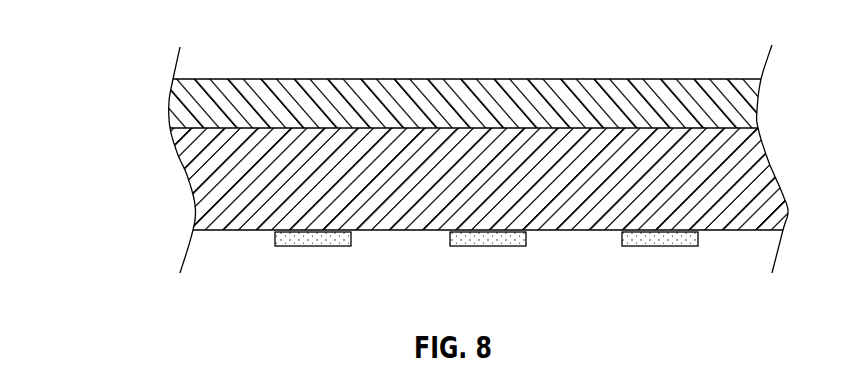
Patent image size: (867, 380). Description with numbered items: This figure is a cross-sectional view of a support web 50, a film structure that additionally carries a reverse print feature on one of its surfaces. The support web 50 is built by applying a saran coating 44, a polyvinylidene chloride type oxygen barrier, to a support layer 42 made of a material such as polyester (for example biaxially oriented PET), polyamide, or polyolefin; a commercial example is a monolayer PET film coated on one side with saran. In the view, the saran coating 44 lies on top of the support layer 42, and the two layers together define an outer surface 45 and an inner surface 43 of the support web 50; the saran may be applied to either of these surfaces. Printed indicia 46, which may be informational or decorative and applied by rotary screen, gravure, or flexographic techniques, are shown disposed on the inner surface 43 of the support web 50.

The support web 50 is at (128, 131).
The saran coating 44 is at (434, 70).
The outer surface 45 is at (483, 78).
The support layer 42 is at (457, 201).
The inner surface 43 is at (552, 232).
The printed indicia 46 is at (315, 247).